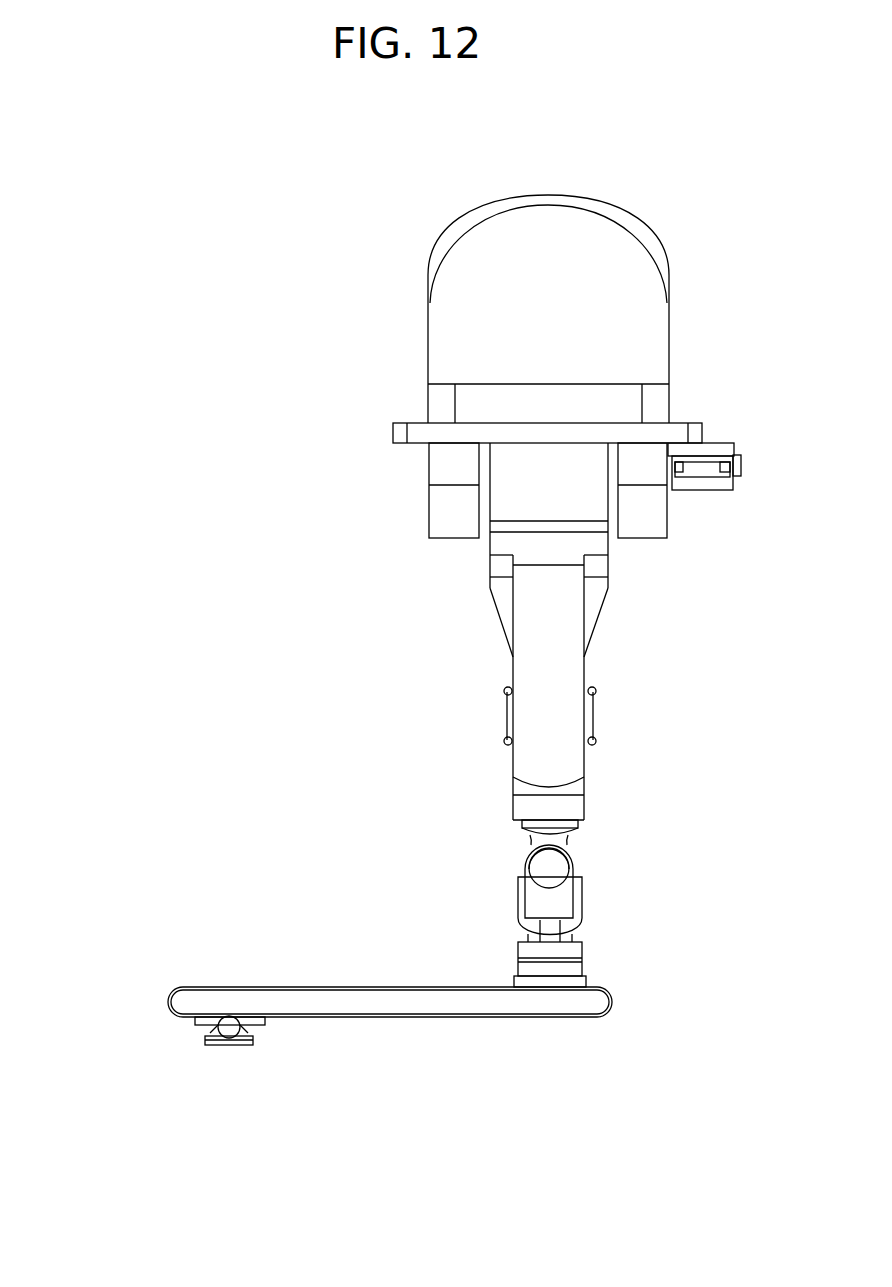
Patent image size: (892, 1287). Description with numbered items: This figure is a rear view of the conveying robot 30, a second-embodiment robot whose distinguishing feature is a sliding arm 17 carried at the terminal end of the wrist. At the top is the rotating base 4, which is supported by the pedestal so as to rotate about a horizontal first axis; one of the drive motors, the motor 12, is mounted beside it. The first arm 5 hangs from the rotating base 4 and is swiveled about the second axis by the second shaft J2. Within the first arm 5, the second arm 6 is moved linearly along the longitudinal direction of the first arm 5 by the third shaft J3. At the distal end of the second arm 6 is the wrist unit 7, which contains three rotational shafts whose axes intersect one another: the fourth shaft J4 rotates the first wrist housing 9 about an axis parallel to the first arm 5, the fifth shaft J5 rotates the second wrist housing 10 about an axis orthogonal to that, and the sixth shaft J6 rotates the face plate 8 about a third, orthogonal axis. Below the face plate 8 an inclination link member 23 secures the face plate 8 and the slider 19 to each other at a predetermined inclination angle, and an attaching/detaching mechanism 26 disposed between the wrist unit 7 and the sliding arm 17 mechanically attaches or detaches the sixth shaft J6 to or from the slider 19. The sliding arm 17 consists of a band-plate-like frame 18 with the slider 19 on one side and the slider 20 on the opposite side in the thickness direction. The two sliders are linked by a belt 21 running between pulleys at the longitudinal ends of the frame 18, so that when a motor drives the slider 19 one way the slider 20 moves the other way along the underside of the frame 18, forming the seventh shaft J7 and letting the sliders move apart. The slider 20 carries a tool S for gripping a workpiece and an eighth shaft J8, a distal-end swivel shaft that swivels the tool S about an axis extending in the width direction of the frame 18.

The conveying robot 30 is at (230, 305).
The rotating base 4 is at (548, 202).
The motor 12 is at (715, 443).
The first arm 5 is at (495, 610).
The second shaft J2 is at (616, 549).
The third shaft J3 is at (507, 768).
The second arm 6 is at (588, 802).
The fourth shaft J4 is at (517, 827).
The first wrist housing 9 is at (582, 828).
The fifth shaft J5 is at (518, 862).
The wrist unit 7 is at (594, 876).
The second wrist housing 10 is at (581, 897).
The sixth shaft J6 is at (517, 913).
The face plate 8 is at (582, 916).
The inclination link member 23 is at (575, 936).
The attaching/detaching mechanism 26 is at (593, 960).
The slider 19 is at (590, 981).
The sliding arm 17 is at (248, 978).
The frame 18 is at (190, 986).
The belt 21 is at (168, 1000).
The slider 20 is at (200, 1027).
The tool S is at (218, 1043).
The eighth shaft J8 is at (243, 1053).
The seventh shaft J7 is at (437, 1021).